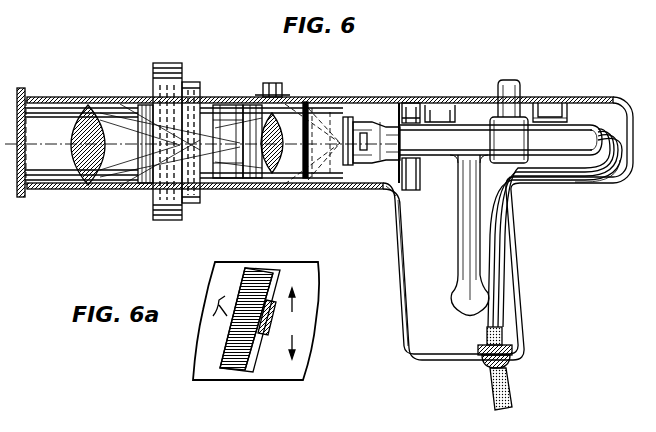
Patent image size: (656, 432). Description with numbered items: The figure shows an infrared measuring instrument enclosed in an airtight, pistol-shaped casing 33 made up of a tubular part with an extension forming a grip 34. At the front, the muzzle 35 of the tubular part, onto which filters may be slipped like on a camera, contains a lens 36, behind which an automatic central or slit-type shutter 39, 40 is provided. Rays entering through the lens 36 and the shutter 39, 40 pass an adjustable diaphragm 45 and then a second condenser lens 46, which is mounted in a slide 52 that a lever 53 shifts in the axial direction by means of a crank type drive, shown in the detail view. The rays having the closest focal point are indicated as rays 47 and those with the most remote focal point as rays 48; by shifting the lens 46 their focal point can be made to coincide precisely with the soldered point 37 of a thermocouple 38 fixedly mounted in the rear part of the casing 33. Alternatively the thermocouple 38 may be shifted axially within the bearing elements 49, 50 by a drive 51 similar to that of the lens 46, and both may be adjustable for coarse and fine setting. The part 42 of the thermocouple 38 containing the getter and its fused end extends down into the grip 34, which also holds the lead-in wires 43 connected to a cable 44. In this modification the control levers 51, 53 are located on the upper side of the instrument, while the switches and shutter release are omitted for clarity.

In FIG. 6, the casing 33 is at (612, 97).
In FIG. 6a, the casing 33 is at (300, 356).
In FIG. 6, the grip 34 is at (512, 256).
In FIG. 6, the muzzle 35 is at (50, 108).
In FIG. 6, the lens 36 is at (90, 178).
In FIG. 6, the soldered point 37 is at (366, 133).
In FIG. 6, the thermocouple 38 is at (458, 127).
In FIG. 6, the shutter 39 is at (150, 98).
In FIG. 6, the shutter 40 is at (154, 192).
In FIG. 6, the part of the thermocouple 42 is at (464, 290).
In FIG. 6, the lead-in wires 43 is at (586, 178).
In FIG. 6, the cable 44 is at (510, 390).
In FIG. 6, the adjustable diaphragm 45 is at (203, 97).
In FIG. 6, the second condenser lens 46 is at (276, 170).
In FIG. 6, the rays with closest focal point 47 is at (311, 105).
In FIG. 6, the rays with most remote focal point 48 is at (336, 114).
In FIG. 6, the bearing element 49 is at (397, 188).
In FIG. 6, the bearing element 50 is at (558, 104).
In FIG. 6, the drive 51 is at (514, 92).
In FIG. 6, the slide 52 is at (270, 178).
In FIG. 6, the lever 53 is at (272, 83).
In FIG. 6a, the lever 53 is at (275, 318).